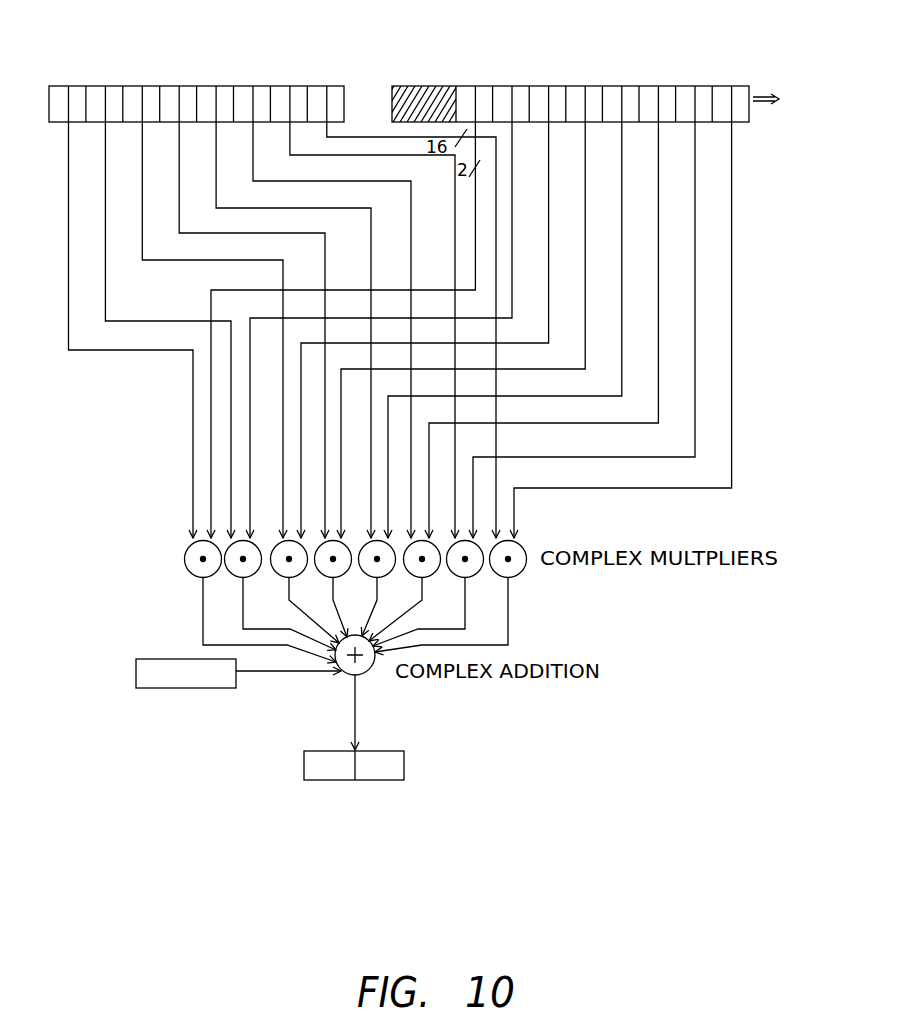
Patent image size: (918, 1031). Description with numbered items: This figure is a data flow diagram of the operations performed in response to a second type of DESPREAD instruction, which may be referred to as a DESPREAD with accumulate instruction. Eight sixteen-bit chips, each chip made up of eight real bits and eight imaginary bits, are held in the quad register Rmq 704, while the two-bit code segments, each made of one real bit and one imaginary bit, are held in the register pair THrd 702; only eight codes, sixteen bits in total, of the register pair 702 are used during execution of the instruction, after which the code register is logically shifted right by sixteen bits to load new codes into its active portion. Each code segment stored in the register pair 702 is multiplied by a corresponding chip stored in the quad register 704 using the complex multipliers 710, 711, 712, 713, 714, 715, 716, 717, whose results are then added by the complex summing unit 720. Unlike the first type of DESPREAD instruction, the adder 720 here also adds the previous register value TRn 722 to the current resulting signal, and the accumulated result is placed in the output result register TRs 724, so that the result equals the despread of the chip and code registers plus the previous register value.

The register pair THrd 702 is at (606, 65).
The quad register Rmq 704 is at (237, 63).
The complex multiplier 710 is at (517, 576).
The complex multiplier 711 is at (474, 576).
The complex multiplier 712 is at (433, 576).
The complex multiplier 713 is at (386, 575).
The complex multiplier 714 is at (323, 577).
The complex multiplier 715 is at (280, 577).
The complex multiplier 716 is at (232, 577).
The complex multiplier 717 is at (193, 577).
The complex summing unit 720 is at (347, 677).
The previous register value 722 is at (203, 688).
The result register TRs 724 is at (328, 781).